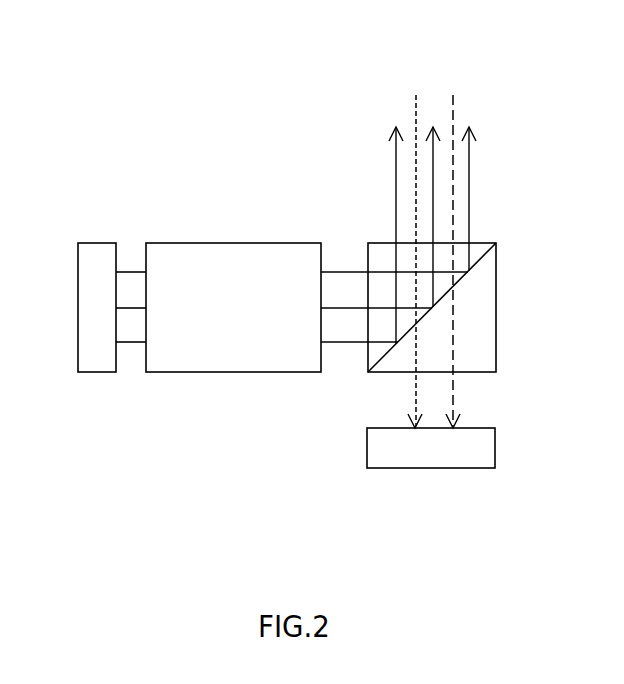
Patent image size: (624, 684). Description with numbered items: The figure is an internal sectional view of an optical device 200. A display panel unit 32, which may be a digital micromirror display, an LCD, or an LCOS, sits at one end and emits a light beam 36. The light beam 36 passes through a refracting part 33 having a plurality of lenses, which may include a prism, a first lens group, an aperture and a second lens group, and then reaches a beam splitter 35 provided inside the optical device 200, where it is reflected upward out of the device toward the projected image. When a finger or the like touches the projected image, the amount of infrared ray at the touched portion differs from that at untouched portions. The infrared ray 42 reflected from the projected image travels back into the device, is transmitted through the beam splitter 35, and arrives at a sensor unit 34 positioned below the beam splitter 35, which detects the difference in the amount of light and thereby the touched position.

The optical device 200 is at (180, 134).
The display panel unit 32 is at (87, 375).
The refracting part 33 is at (238, 373).
The sensor unit 34 is at (463, 477).
The beam splitter 35 is at (497, 298).
The light beam 36 is at (469, 187).
The infrared ray 42 is at (453, 112).